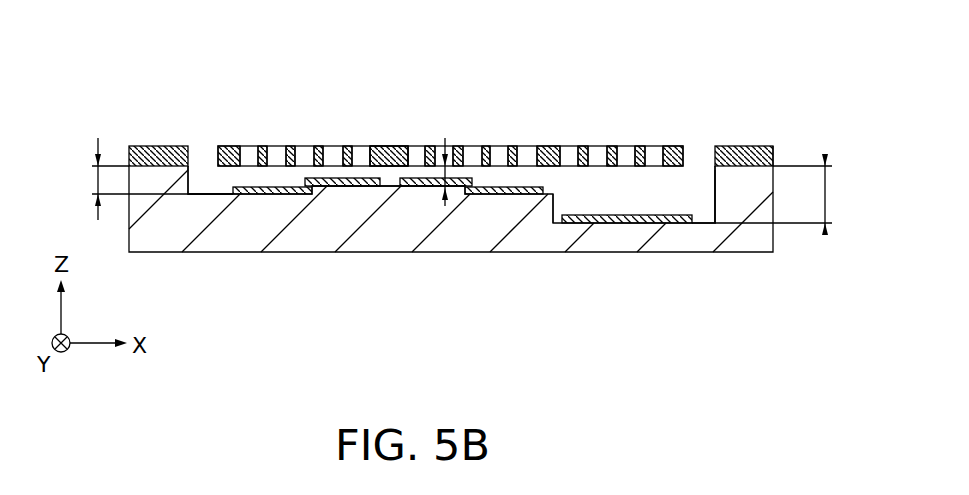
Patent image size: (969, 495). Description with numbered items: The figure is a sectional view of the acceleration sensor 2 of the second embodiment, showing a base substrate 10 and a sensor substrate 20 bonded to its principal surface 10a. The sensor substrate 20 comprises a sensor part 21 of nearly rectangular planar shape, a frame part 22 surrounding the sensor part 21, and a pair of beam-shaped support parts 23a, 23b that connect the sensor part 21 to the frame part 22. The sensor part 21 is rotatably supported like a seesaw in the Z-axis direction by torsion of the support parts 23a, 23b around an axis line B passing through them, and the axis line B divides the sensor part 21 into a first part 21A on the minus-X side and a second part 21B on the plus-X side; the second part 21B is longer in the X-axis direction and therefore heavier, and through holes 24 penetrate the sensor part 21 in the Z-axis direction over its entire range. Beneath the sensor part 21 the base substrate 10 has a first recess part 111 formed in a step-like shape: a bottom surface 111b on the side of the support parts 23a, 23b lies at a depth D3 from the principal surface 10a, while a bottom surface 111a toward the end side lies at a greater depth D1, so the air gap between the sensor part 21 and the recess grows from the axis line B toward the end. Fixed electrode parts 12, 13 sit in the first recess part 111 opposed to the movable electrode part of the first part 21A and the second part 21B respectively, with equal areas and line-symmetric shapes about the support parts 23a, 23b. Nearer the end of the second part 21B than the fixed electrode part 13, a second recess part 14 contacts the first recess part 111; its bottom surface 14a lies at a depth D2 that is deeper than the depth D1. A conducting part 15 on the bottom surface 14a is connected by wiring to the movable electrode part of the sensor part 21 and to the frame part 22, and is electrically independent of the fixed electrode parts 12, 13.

The acceleration sensor 2 is at (672, 90).
The base substrate 10 is at (775, 240).
The principal surface 10a is at (150, 146).
The first recess part 111 is at (198, 172).
The bottom surface 111a is at (205, 196).
The bottom surface 111b is at (375, 187).
The fixed electrode part 12 is at (266, 188).
The fixed electrode part 13 is at (515, 188).
The second recess part 14 is at (716, 175).
The bottom surface 14a is at (710, 222).
The conducting part 15 is at (642, 215).
The sensor substrate 20 is at (785, 153).
The sensor part 21 is at (372, 136).
The first part 21A is at (296, 146).
The second part 21B is at (518, 146).
The frame part 22 is at (750, 146).
The support part 23a is at (393, 146).
The support part 23b is at (422, 127).
The through holes 24 is at (622, 146).
The axis line B is at (387, 155).
The depth D1 is at (126, 179).
The depth D2 is at (773, 194).
The depth D3 is at (447, 206).